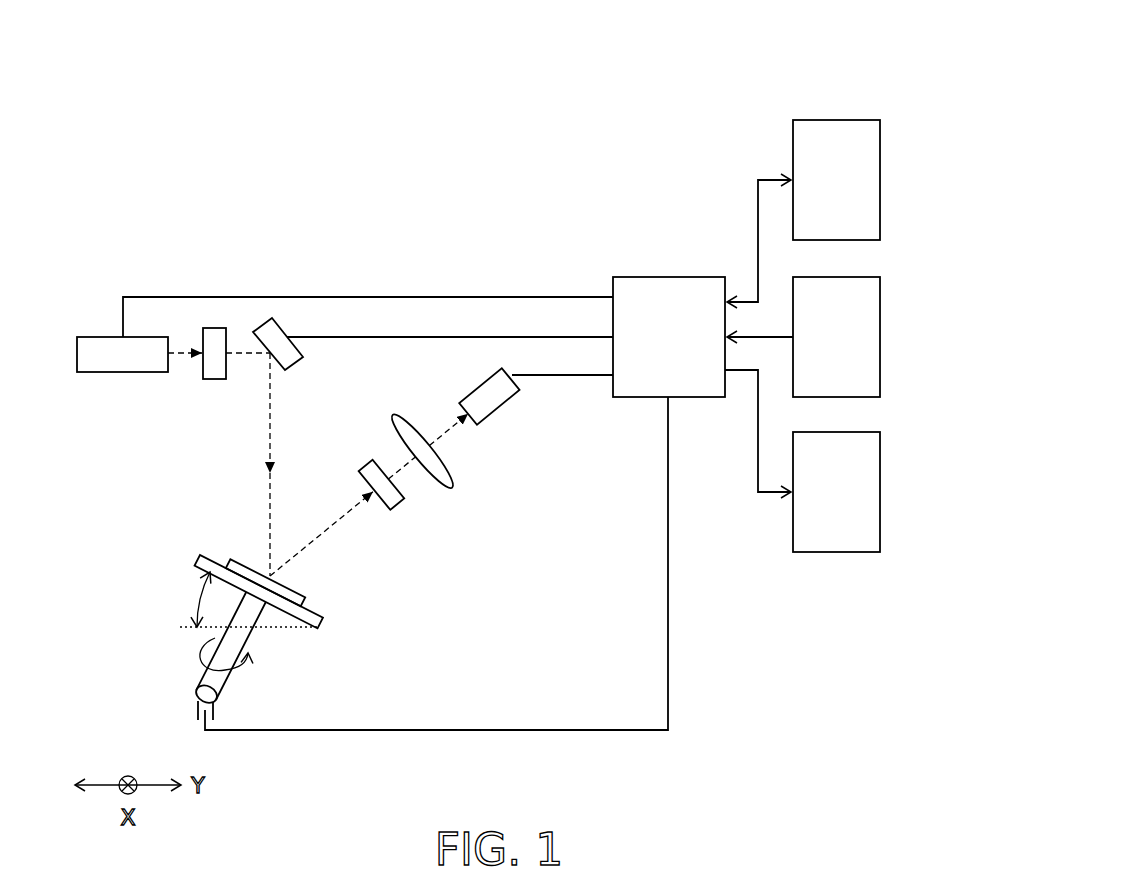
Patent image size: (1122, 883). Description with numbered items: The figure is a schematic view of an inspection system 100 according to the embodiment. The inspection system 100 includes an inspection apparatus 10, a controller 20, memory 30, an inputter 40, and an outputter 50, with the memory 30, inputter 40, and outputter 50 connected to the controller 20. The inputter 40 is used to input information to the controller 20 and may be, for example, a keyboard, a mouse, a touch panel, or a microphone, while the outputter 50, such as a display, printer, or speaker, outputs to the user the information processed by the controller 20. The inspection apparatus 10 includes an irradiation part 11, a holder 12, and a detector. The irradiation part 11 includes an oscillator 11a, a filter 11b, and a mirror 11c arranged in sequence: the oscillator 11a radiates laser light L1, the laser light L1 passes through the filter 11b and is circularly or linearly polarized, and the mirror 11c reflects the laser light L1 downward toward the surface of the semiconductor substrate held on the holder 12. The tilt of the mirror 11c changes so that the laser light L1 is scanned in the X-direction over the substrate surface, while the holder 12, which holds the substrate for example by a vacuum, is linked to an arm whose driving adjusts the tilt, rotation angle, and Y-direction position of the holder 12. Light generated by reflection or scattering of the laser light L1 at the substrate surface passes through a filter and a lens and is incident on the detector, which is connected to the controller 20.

The inspection system 100 is at (890, 86).
The inspection apparatus 10 is at (98, 305).
The irradiation part 11 is at (58, 425).
The oscillator 11a is at (93, 372).
The filter 11b is at (217, 379).
The mirror 11c is at (265, 360).
The holder 12 is at (317, 610).
The controller 20 is at (668, 277).
The memory 30 is at (880, 180).
The inputter 40 is at (880, 337).
The outputter 50 is at (880, 492).
The laser light L1 is at (272, 412).